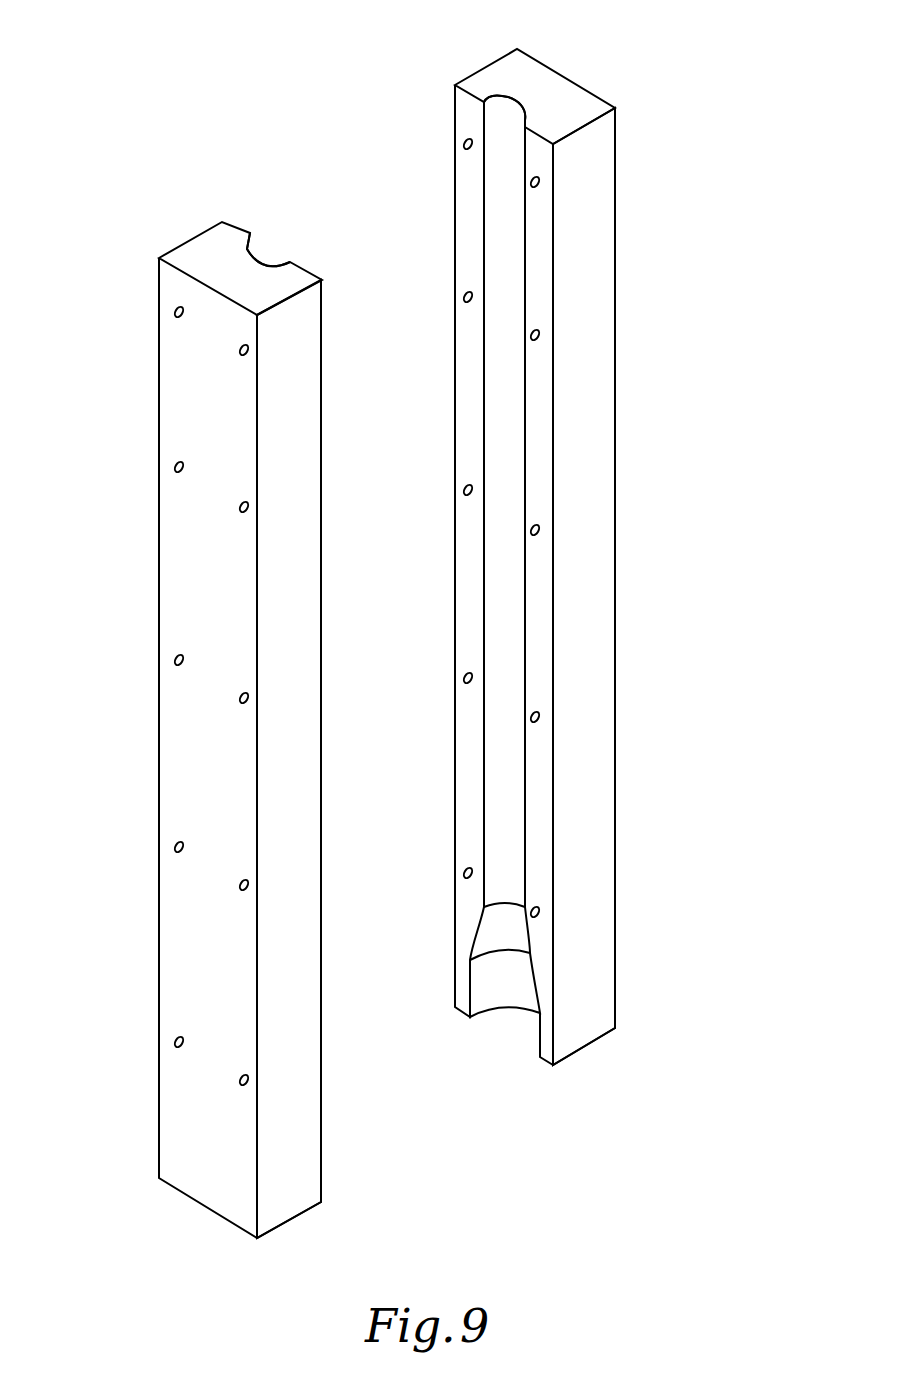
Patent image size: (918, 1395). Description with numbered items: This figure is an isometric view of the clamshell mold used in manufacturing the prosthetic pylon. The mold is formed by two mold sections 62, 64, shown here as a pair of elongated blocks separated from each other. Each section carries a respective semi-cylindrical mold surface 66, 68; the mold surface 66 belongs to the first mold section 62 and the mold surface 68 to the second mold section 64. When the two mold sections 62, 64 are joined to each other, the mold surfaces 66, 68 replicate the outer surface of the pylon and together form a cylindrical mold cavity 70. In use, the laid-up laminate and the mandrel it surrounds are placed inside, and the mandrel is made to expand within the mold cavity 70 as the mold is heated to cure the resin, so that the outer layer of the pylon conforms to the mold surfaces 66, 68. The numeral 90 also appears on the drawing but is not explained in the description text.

The mold section 62 is at (187, 772).
The mold section 64 is at (577, 755).
The semi-cylindrical mold surface 66 is at (287, 773).
The semi-cylindrical mold surface 68 is at (508, 467).
The cylindrical mold cavity 70 is at (280, 220).
The clamping block assembly 90 is at (672, 596).